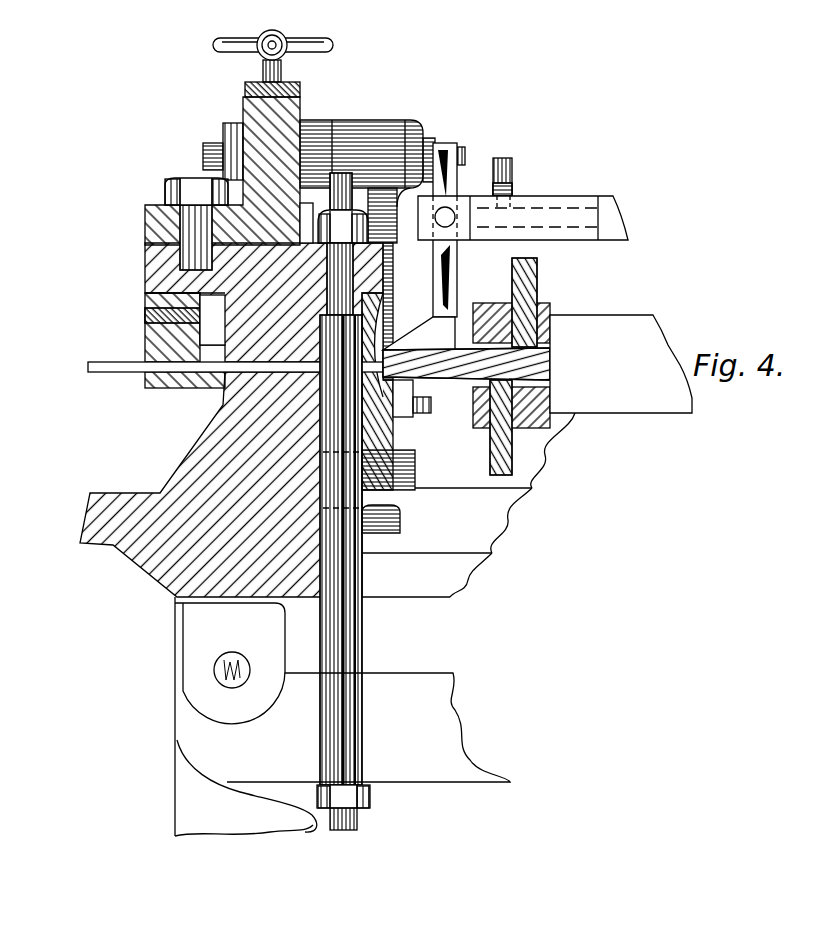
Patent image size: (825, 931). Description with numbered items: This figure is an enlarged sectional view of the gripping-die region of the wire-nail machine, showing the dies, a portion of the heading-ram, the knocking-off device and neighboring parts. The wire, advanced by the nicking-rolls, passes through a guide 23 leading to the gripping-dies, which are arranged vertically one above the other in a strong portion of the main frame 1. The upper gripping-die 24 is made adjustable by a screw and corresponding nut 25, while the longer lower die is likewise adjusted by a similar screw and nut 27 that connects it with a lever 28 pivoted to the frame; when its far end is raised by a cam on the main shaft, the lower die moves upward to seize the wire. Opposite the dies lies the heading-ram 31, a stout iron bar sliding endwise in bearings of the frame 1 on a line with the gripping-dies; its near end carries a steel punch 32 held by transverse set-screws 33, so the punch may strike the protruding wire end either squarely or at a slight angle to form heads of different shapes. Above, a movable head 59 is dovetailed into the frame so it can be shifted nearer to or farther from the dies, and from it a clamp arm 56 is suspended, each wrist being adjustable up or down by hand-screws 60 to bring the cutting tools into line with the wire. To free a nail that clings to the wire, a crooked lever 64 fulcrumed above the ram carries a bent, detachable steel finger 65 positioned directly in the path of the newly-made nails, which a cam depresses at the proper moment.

The frame 1 is at (221, 484).
The guide 23 is at (235, 387).
The upper gripping-die 24 is at (328, 334).
The screw and nut 25 is at (369, 223).
The screw and nut 27 is at (359, 807).
The lever 28 is at (342, 716).
The heading-ram 31 is at (621, 364).
The steel punch 32 is at (466, 348).
The set-screws 33 is at (520, 366).
The arm 56 is at (391, 171).
The movable head 59 is at (222, 176).
The hand-screws 60 is at (273, 56).
The crooked lever 64 is at (523, 199).
The steel finger 65 is at (434, 230).